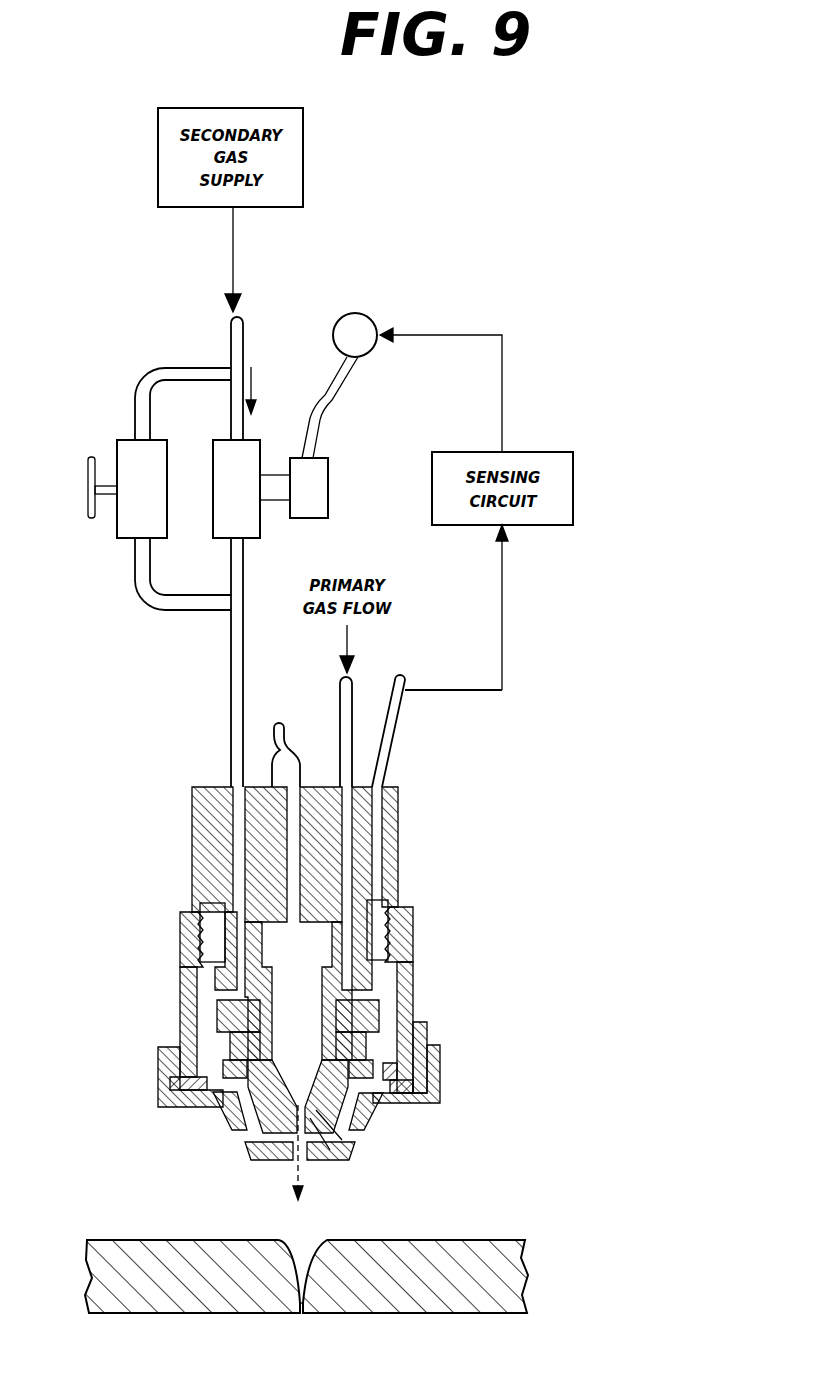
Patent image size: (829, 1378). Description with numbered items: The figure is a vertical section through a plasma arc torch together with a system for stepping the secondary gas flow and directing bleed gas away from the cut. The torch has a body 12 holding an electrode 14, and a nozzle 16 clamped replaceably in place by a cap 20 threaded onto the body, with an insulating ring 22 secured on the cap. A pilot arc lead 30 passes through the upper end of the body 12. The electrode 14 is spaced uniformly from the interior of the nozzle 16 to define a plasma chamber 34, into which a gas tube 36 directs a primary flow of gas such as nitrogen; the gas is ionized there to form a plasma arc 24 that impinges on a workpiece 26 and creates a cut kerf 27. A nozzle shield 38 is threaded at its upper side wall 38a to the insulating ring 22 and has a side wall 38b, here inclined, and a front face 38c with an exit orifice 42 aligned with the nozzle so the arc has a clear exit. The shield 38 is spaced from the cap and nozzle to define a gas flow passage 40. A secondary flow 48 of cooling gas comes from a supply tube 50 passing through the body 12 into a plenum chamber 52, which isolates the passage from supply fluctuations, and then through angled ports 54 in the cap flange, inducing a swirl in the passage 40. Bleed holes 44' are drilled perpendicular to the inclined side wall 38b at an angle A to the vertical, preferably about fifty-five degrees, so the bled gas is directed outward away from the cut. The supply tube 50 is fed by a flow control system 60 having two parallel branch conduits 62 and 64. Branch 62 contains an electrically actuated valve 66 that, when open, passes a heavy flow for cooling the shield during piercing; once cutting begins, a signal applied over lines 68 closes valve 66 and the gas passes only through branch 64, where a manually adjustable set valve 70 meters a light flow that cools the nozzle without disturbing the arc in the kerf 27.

The body 12 is at (405, 826).
The electrode 14 is at (312, 990).
The nozzle 16 is at (262, 1049).
The cap 20 is at (413, 941).
The insulating ring 22 is at (427, 1031).
The plasma arc 24 is at (292, 1150).
The workpiece 26 is at (415, 1240).
The cut kerf 27 is at (298, 1272).
The pilot arc lead 30 is at (402, 737).
The plasma chamber 34 is at (378, 1108).
The gas tube 36 is at (340, 713).
The nozzle shield 38 is at (415, 1124).
The upper side wall 38a is at (440, 1074).
The side wall 38b is at (227, 1118).
The front face 38c is at (253, 1162).
The gas flow passage 40 is at (393, 1120).
The exit orifice 42 is at (307, 1163).
The holes 44' is at (289, 1157).
The flow 48 is at (231, 258).
The supply tube 50 is at (243, 328).
The plenum chamber 52 is at (205, 980).
The ports 54 is at (188, 1078).
The flow control system 60 is at (318, 283).
The branch conduit 62 is at (258, 388).
The branch conduit 64 is at (168, 358).
The electrically actuated valve 66 is at (258, 530).
The lines 68 is at (322, 412).
The set valve 70 is at (117, 530).
The angle A is at (334, 1153).